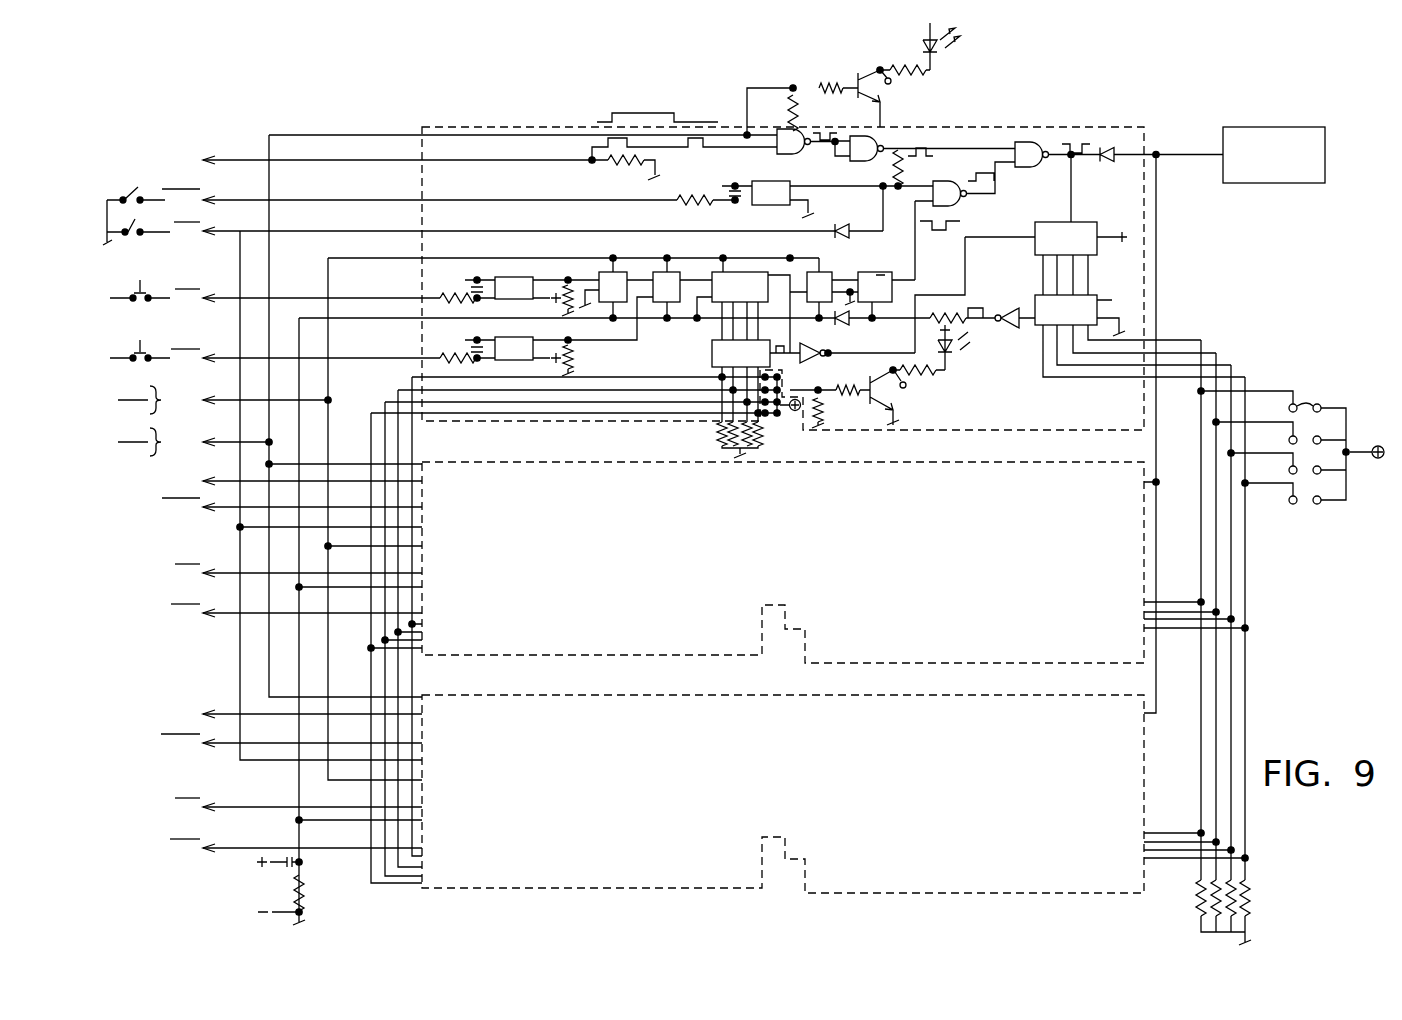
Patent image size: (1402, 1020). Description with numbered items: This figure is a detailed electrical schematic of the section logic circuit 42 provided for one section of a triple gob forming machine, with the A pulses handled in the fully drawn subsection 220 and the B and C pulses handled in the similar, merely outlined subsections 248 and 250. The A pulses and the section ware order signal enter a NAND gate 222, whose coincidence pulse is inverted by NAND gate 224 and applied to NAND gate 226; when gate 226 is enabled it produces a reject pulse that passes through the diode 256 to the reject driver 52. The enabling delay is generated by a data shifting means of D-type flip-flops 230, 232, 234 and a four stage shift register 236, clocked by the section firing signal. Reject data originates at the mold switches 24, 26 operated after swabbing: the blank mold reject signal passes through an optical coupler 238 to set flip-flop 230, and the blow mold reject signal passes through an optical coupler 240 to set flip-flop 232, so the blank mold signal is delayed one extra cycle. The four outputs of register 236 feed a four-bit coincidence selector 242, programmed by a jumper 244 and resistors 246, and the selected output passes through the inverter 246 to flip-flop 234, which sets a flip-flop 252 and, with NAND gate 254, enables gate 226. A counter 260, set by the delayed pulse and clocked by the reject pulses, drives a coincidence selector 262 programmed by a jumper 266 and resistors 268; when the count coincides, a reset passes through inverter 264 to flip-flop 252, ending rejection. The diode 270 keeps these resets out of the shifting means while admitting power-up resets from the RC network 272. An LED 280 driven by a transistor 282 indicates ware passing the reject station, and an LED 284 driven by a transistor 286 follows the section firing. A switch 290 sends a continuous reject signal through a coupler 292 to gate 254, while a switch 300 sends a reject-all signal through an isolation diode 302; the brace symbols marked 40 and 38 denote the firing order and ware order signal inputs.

The section logic circuit 42 is at (306, 108).
The subsection 220 is at (468, 126).
The NAND gate 222 is at (784, 154).
The NAND gate 224 is at (855, 162).
The NAND gate 226 is at (1035, 141).
The diode 256 is at (1108, 146).
The reject driver 52 is at (1240, 185).
The LED 280 is at (947, 52).
The transistor 282 is at (882, 97).
The coupler 292 is at (758, 206).
The isolation diode 302 is at (845, 229).
The NAND gate 254 is at (963, 202).
The counter 260 is at (1090, 235).
The coincidence selector 262 is at (1094, 302).
The inverter 264 is at (1006, 310).
The optical coupler 238 is at (499, 280).
The optical coupler 240 is at (532, 340).
The D-type flip-flop 230 is at (600, 272).
The D-type flip-flop 232 is at (655, 272).
The four stage shift register 236 is at (742, 272).
The D-type flip-flop 234 is at (821, 272).
The flip-flop 252 is at (872, 272).
The diode 270 is at (848, 328).
The four-bit coincidence selector 242 is at (712, 349).
The inverter and resistors 246 is at (817, 362).
The jumper 244 is at (771, 416).
The transistor 286 is at (895, 402).
The LED 284 is at (952, 361).
The subsection 248 is at (510, 655).
The subsection 250 is at (525, 697).
The resistors 268 is at (1252, 898).
The jumper 266 is at (1319, 398).
The RC network 272 is at (305, 890).
The single pole, single throw switch 290 is at (136, 197).
The single pole, single throw switch 300 is at (130, 234).
The mold switch 24 is at (135, 285).
The mold switch 26 is at (135, 345).
The switch 40 is at (136, 393).
The switch 38 is at (136, 436).